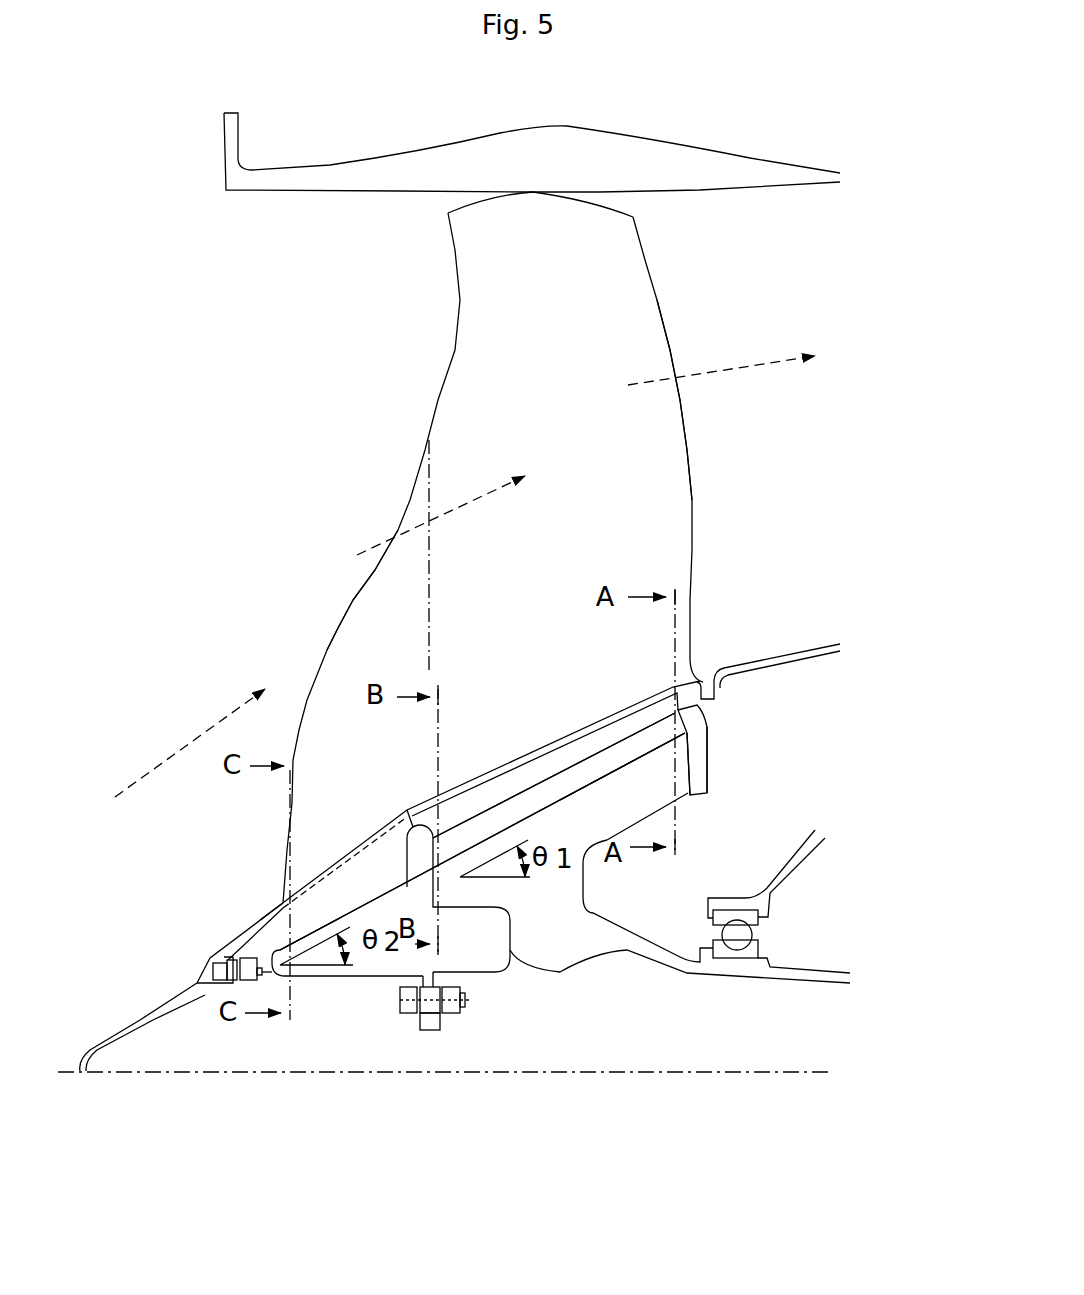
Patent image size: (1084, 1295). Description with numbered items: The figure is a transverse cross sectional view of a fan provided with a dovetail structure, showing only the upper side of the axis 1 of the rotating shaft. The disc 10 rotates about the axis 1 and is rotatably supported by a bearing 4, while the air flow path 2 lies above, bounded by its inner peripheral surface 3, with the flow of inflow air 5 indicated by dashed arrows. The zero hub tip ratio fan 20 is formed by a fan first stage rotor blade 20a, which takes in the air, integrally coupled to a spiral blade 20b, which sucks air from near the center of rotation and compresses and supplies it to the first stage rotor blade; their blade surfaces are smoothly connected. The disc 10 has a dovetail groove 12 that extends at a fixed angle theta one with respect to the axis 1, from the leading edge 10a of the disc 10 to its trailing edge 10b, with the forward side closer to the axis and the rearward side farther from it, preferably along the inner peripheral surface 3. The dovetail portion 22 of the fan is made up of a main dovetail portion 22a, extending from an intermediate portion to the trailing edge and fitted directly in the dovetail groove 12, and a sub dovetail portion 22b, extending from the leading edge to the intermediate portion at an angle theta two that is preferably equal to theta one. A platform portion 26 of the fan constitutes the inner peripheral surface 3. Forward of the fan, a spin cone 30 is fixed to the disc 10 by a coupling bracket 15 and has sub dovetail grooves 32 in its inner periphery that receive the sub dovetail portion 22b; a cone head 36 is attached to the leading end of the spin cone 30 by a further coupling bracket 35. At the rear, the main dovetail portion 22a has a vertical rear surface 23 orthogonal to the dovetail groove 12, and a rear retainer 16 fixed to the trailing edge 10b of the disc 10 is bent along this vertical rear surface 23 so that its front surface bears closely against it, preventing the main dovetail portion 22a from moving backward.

The axis of a rotating shaft 1 is at (480, 1086).
The air flow path 2 is at (183, 531).
The inner peripheral surface of the air flow path 3 is at (552, 735).
The bearing 4 is at (766, 935).
The flow of an inflow air 5 is at (797, 350).
The disc 10 is at (588, 975).
The leading edge of the disc 10a is at (391, 900).
The trailing edge of the disc 10b is at (699, 781).
The dovetail groove 12 is at (621, 777).
The coupling bracket 15 is at (405, 1026).
The rear retainer 16 is at (700, 752).
The zero hub tip ratio fan 20 is at (398, 483).
The fan first stage rotor blade 20a is at (563, 346).
The spiral blade 20b is at (372, 634).
The dovetail portion 22 is at (367, 745).
The main dovetail portion 22a is at (485, 809).
The sub dovetail portion 22b is at (346, 904).
The vertical rear surface 23 is at (698, 722).
The platform portion 26 is at (590, 730).
The spin cone 30 is at (240, 926).
The sub dovetail groove 32 is at (315, 943).
The coupling bracket 35 is at (207, 964).
The cone head 36 is at (137, 1027).